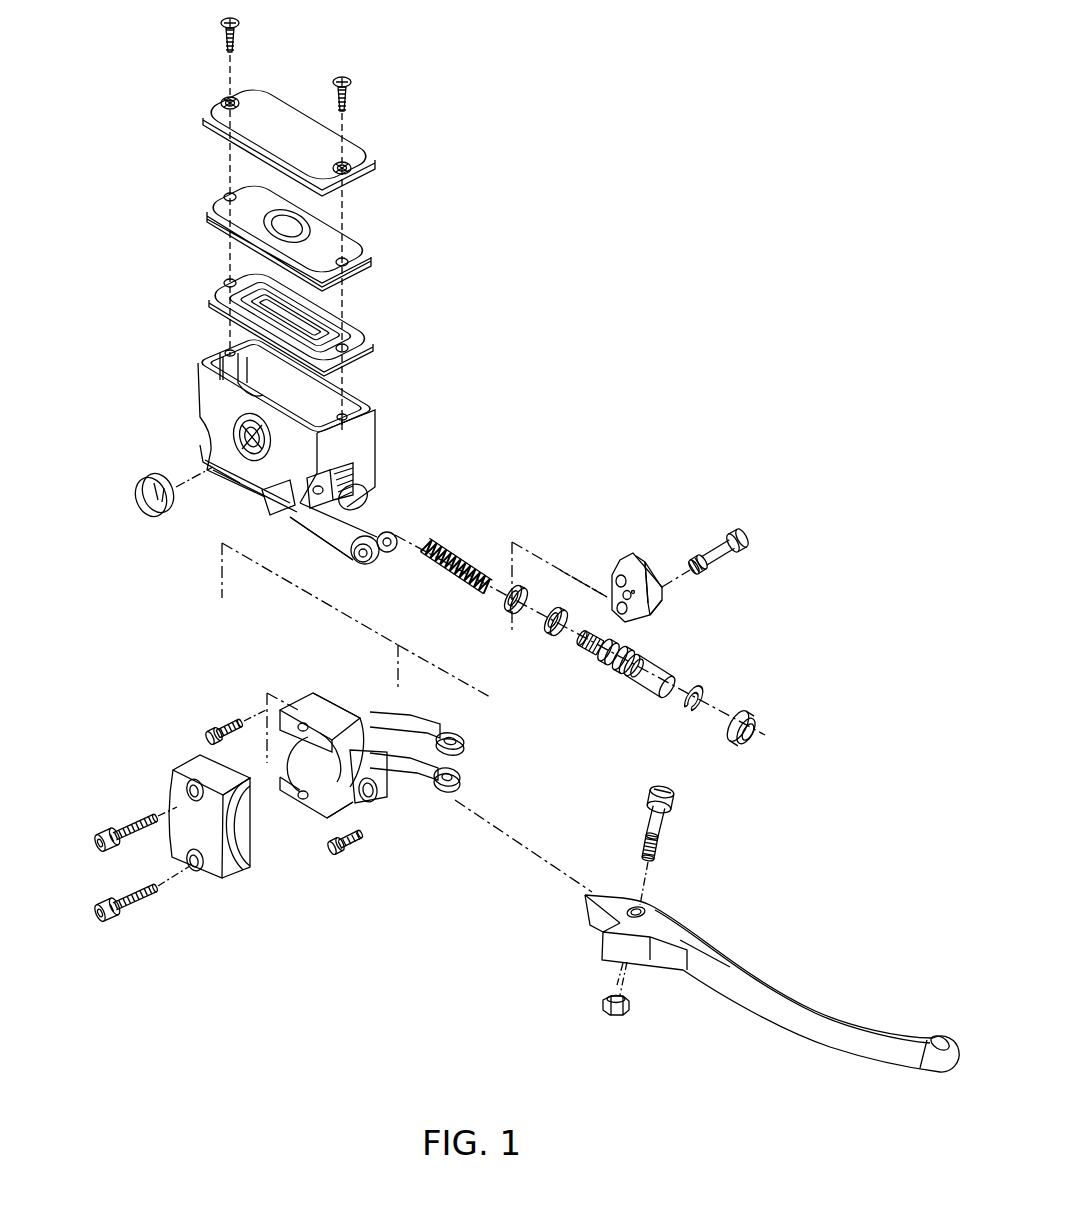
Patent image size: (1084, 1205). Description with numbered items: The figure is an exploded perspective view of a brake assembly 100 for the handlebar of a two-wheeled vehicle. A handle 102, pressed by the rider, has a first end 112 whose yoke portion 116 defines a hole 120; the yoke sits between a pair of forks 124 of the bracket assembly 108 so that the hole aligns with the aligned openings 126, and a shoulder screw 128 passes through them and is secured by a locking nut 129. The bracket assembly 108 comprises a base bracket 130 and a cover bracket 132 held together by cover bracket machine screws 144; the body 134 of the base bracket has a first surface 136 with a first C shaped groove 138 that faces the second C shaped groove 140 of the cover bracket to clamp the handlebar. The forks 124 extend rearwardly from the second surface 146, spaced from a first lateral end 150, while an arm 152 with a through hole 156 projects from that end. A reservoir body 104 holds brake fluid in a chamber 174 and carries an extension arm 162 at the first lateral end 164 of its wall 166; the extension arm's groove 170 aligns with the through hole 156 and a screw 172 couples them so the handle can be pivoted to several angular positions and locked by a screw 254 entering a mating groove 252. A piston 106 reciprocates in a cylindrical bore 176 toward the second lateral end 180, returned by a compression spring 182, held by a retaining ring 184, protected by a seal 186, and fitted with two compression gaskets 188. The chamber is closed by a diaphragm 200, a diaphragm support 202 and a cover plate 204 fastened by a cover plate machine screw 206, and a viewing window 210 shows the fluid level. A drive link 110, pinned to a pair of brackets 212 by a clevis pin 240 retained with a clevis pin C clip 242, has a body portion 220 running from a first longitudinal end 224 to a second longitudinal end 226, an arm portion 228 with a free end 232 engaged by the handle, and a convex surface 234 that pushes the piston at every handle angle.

The brake assembly 100 is at (500, 545).
The handle 102 is at (723, 953).
The reservoir body 104 is at (261, 422).
The piston 106 is at (631, 695).
The bracket assembly 108 is at (294, 779).
The drive link 110 is at (659, 546).
The first end 112 is at (616, 896).
The yoke portion 116 is at (597, 913).
The hole 120 is at (653, 905).
The pair of forks 124 is at (478, 744).
The aligned openings 126 is at (452, 775).
The shoulder screw 128 is at (667, 823).
The locking nut 129 is at (600, 1005).
The base bracket 130 is at (309, 737).
The cover bracket 132 is at (189, 844).
The body 134 is at (295, 707).
The first surface 136 is at (318, 800).
The first C shaped groove 138 is at (326, 781).
The second C shaped groove 140 is at (243, 835).
The cover bracket machine screws 144 is at (99, 830).
The second surface 146 is at (448, 735).
The first lateral end 150 is at (352, 808).
The arm 152 is at (345, 712).
The through hole 156 is at (245, 790).
The extension arm 162 is at (350, 553).
The first lateral end 164 is at (365, 433).
The wall 166 is at (262, 492).
The groove 170 is at (320, 500).
The screw 172 is at (340, 858).
The chamber 174 is at (312, 402).
The cylindrical bore 176 is at (300, 512).
The second lateral end 180 is at (200, 363).
The compression spring 182 is at (465, 560).
The retaining ring 184 is at (706, 696).
The seal 186 is at (752, 742).
The compression gaskets 188 is at (517, 612).
The diaphragm 200 is at (205, 297).
The diaphragm support 202 is at (205, 212).
The cover plate 204 is at (203, 118).
The cover plate machine screw 206 is at (240, 18).
The viewing window 210 is at (142, 490).
The pair of brackets 212 is at (352, 555).
The body portion 220 is at (600, 592).
The first longitudinal end 224 is at (616, 670).
The second longitudinal end 226 is at (612, 582).
The arm portion 228 is at (652, 582).
The free end 232 is at (663, 598).
The convex surface 234 is at (566, 545).
The clevis pin 240 is at (736, 538).
The clevis pin C clip 242 is at (697, 558).
The mating groove 252 is at (198, 403).
The screw 254 is at (208, 732).